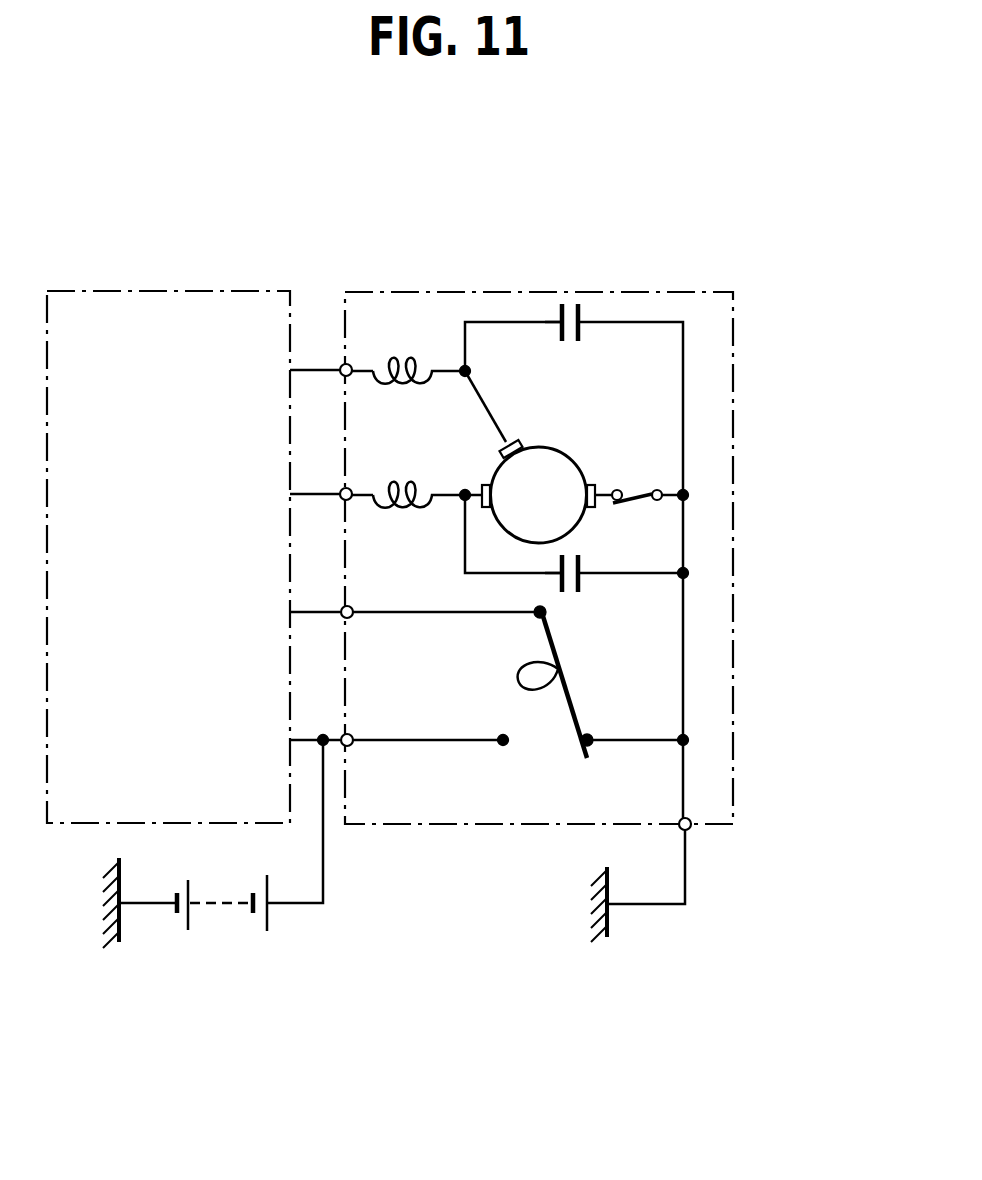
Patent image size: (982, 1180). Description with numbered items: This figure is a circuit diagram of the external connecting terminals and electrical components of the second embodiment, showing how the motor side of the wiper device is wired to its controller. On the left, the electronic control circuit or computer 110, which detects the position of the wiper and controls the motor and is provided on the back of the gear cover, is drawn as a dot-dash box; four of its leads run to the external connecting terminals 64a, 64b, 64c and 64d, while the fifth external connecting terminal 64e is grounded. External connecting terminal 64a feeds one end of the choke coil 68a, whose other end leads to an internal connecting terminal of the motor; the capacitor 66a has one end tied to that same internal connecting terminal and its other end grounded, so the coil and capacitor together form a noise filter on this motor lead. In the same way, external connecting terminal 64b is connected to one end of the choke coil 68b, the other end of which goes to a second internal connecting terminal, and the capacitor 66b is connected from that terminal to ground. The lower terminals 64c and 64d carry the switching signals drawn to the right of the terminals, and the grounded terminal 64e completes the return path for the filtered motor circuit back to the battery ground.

The electronic control circuit 110 is at (175, 290).
The external connecting terminal 64a is at (344, 366).
The external connecting terminal 64b is at (350, 489).
The external connecting terminal 64c is at (350, 746).
The external connecting terminal 64d is at (352, 617).
The external connecting terminal 64e is at (689, 830).
The capacitor 66a is at (580, 320).
The capacitor 66b is at (583, 560).
The choke coil 68a is at (418, 359).
The choke coil 68b is at (417, 484).